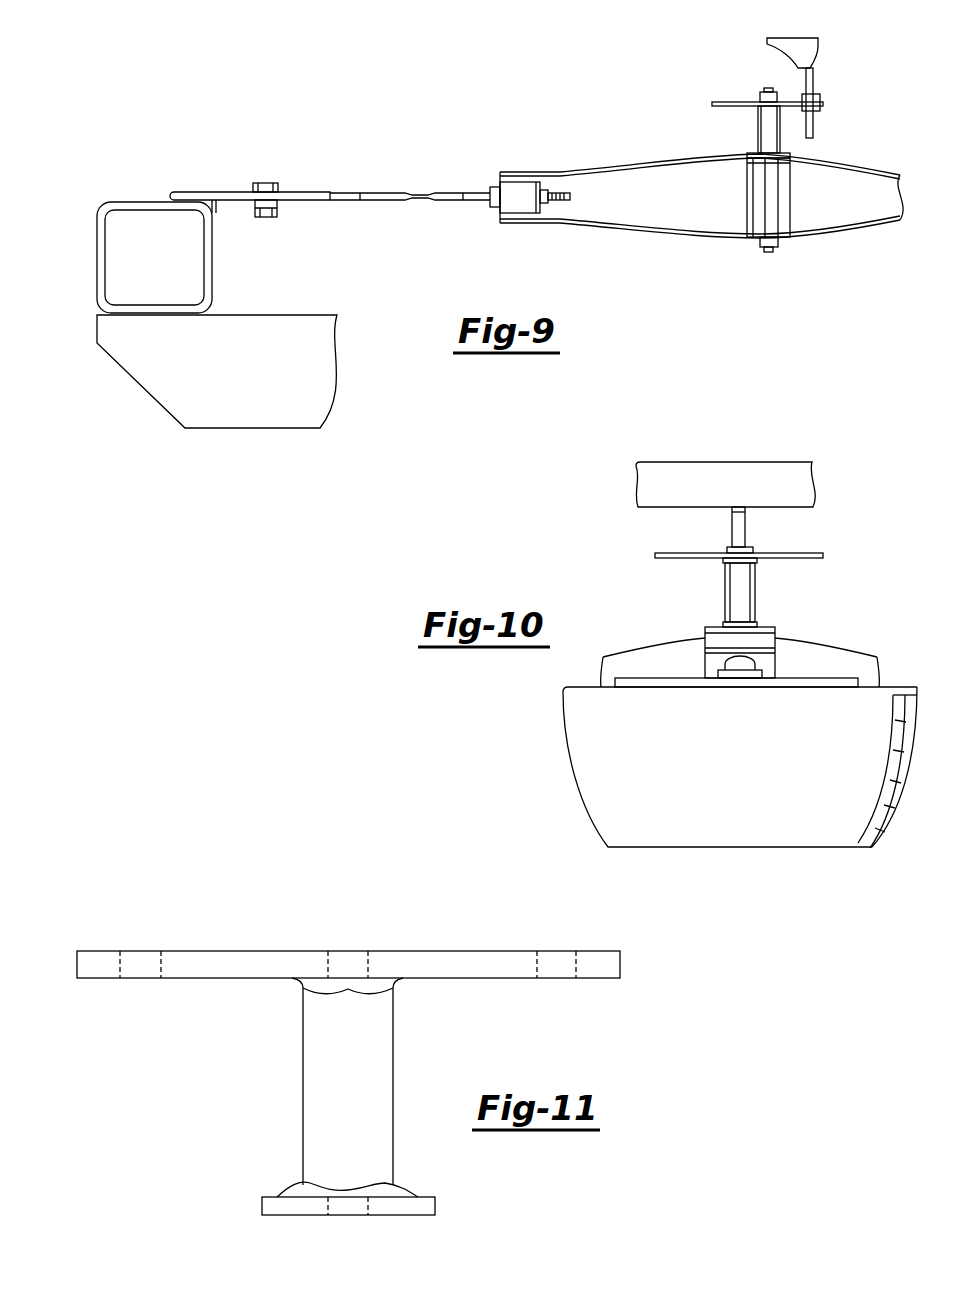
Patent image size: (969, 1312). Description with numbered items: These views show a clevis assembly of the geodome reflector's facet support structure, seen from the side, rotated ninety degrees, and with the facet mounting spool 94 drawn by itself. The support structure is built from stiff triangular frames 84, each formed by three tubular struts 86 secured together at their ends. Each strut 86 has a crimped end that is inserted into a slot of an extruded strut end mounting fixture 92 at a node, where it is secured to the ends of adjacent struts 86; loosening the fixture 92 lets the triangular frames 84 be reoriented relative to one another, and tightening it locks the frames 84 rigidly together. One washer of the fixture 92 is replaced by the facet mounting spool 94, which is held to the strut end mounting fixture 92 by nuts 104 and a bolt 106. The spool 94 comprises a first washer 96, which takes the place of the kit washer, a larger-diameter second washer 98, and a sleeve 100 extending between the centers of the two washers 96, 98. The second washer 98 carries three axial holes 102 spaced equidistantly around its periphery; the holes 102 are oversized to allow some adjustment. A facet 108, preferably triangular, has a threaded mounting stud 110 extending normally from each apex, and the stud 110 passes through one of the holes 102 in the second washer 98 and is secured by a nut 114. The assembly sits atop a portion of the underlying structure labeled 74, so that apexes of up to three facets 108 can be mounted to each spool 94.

In FIG. 9, the frame 74 is at (125, 376).
In FIG. 10, the frame 74 is at (866, 849).
In FIG. 9, the triangular frame 84 is at (378, 210).
In FIG. 9, the tubular strut 86 is at (882, 224).
In FIG. 9, the strut end mounting fixture 92 is at (798, 202).
In FIG. 9, the facet mounting spool 94 is at (756, 133).
In FIG. 10, the facet mounting spool 94 is at (758, 597).
In FIG. 11, the facet mounting spool 94 is at (336, 1050).
In FIG. 11, the first washer 96 is at (258, 1205).
In FIG. 10, the second washer 98 is at (823, 556).
In FIG. 11, the second washer 98 is at (75, 963).
In FIG. 11, the sleeve 100 is at (396, 1060).
In FIG. 11, the hole 102 is at (160, 963).
In FIG. 9, the nut 104 is at (758, 96).
In FIG. 9, the bolt 106 is at (766, 253).
In FIG. 9, the facet 108 is at (820, 50).
In FIG. 10, the facet 108 is at (742, 462).
In FIG. 9, the threaded mounting stud 110 is at (814, 130).
In FIG. 10, the threaded mounting stud 110 is at (732, 530).
In FIG. 9, the nut 114 is at (820, 110).